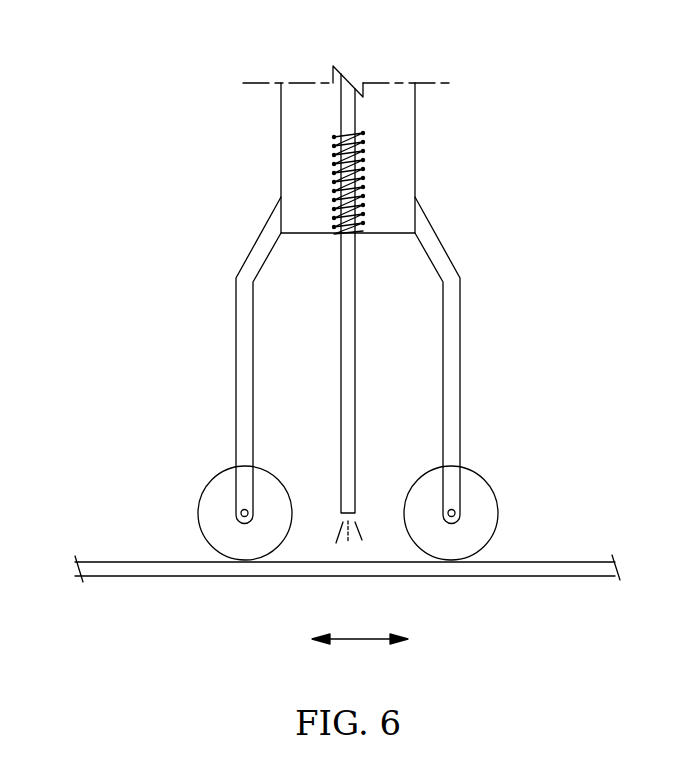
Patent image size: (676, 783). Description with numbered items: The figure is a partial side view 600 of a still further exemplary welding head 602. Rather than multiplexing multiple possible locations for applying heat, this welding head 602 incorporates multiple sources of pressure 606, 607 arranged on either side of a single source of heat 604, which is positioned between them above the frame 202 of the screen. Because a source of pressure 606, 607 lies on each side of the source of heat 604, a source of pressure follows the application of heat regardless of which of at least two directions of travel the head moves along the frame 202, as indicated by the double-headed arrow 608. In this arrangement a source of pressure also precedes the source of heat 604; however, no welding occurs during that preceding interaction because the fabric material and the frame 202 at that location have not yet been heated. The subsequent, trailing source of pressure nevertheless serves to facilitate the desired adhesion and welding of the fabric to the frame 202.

The partial side view 600 is at (325, 328).
The welding head 602 is at (281, 143).
The source of heat 604 is at (337, 537).
The source of pressure 606 is at (198, 513).
The source of pressure 607 is at (498, 512).
The frame 202 is at (165, 577).
The direction of movement 608 is at (360, 641).